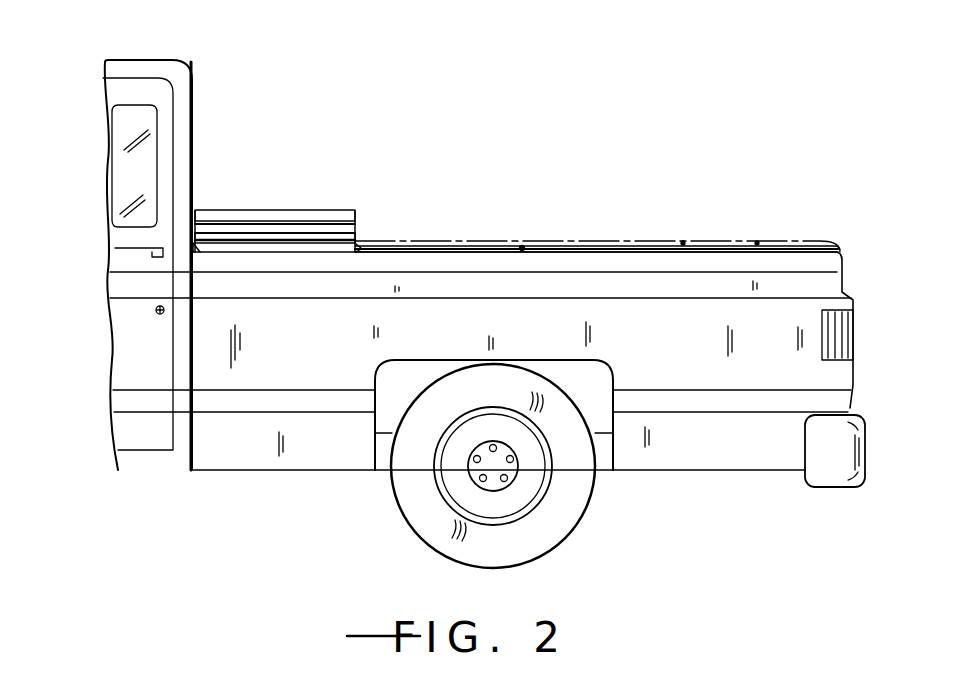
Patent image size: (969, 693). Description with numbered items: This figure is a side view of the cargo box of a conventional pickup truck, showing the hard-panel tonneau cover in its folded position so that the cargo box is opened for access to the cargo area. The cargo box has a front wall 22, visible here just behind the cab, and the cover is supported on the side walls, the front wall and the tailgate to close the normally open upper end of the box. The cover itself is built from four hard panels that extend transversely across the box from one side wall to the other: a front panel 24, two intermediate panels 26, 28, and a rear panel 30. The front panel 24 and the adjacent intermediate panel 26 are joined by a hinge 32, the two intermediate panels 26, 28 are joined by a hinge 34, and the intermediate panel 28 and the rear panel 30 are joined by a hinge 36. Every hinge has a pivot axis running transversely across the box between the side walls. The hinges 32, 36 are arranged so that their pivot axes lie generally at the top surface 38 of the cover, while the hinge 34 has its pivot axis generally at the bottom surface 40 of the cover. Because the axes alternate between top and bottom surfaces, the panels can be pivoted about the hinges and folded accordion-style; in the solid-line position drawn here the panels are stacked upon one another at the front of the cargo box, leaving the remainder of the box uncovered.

The front wall 22 is at (193, 357).
The front panel 24 is at (282, 248).
The intermediate panel 26 is at (210, 235).
The intermediate panel 28 is at (233, 227).
The rear panel 30 is at (272, 215).
The hinge 32 is at (357, 243).
The hinge 34 is at (200, 233).
The hinge 36 is at (357, 243).
The top surface 38 is at (487, 243).
The bottom surface 40 is at (614, 255).